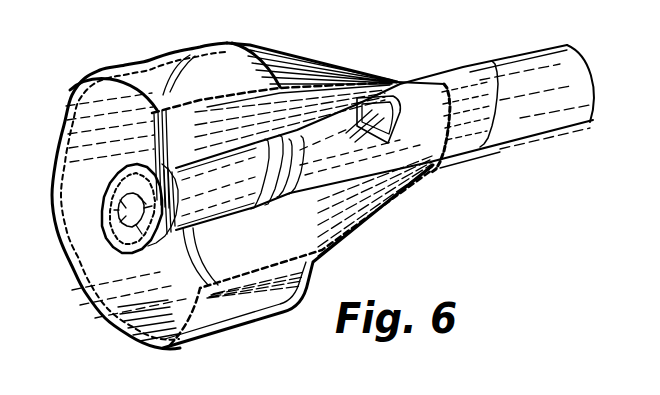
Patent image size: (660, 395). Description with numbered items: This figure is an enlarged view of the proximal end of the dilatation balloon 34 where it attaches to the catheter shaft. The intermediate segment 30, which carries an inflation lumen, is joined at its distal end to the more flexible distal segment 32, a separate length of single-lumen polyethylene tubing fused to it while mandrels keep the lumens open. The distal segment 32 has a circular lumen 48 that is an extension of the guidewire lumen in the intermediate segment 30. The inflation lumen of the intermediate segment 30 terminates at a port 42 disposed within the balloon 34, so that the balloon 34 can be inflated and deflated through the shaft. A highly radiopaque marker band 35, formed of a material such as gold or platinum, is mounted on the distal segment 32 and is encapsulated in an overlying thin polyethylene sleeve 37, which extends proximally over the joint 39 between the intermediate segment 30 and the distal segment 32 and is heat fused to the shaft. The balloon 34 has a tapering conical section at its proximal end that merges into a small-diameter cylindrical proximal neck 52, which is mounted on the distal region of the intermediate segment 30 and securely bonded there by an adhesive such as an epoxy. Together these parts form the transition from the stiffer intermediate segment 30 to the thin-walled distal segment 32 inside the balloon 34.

The intermediate segment 30 is at (313, 203).
The distal segment 32 is at (273, 162).
The dilatation balloon 34 is at (247, 67).
The radiopaque marker band 35 is at (110, 188).
The polyethylene sleeve 37 is at (209, 165).
The joint 39 is at (263, 217).
The port 42 is at (377, 112).
The circular lumen 48 is at (127, 238).
The proximal neck 52 is at (463, 160).